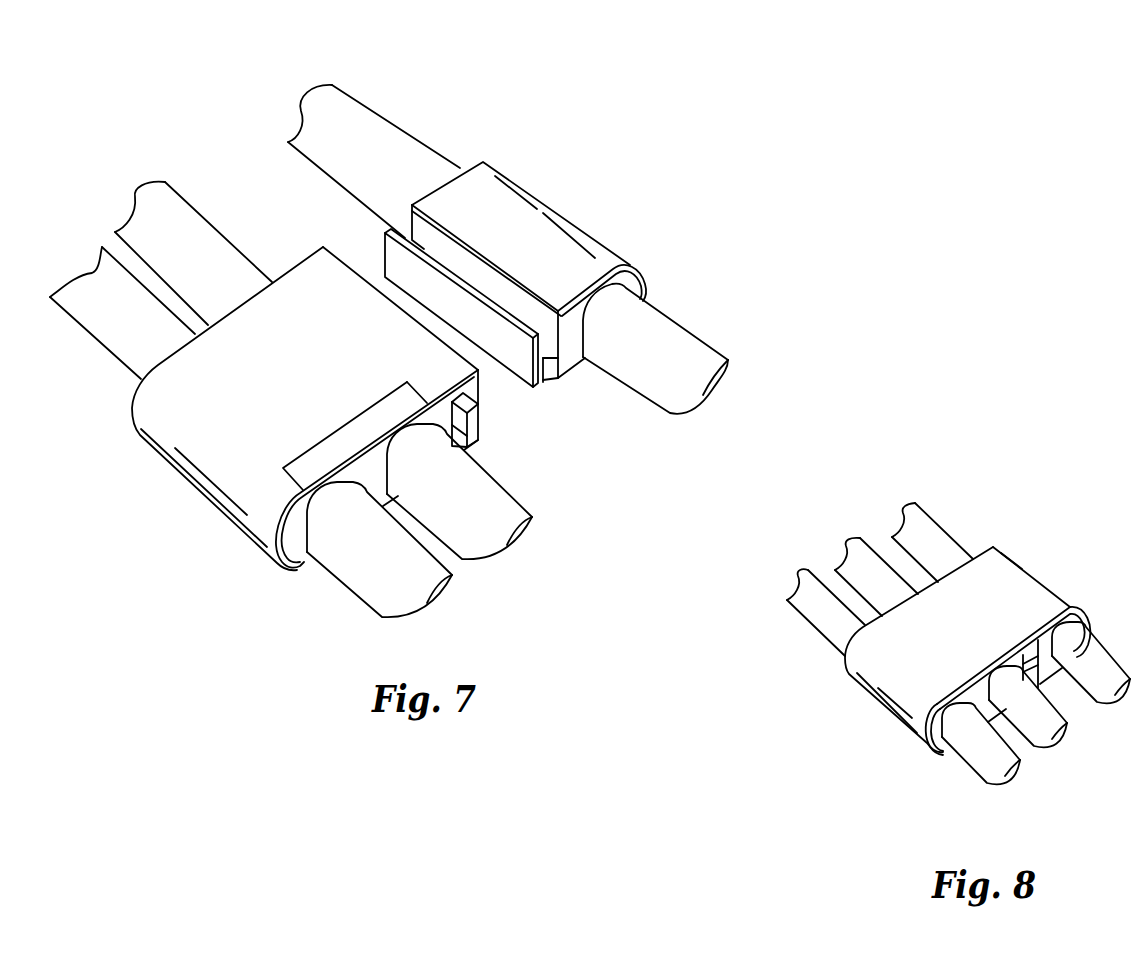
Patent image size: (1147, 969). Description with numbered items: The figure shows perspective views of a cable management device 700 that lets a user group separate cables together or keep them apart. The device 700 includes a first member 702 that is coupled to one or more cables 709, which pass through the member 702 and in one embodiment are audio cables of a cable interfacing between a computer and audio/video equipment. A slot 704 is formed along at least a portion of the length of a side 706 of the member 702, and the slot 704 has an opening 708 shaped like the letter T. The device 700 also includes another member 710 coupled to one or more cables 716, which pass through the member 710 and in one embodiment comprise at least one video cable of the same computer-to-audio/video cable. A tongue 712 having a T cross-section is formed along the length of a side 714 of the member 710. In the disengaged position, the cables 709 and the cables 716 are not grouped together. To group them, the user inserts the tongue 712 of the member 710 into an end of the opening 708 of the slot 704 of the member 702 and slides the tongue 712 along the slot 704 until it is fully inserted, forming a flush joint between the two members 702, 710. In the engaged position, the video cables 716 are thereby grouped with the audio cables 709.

In FIG. 7, the cable management device 700 is at (752, 307).
In FIG. 8, the cable management device 700 is at (1088, 547).
In FIG. 7, the member 702 is at (240, 530).
In FIG. 7, the slot 704 is at (482, 437).
In FIG. 7, the side 706 is at (480, 392).
In FIG. 7, the opening 708 is at (475, 407).
In FIG. 7, the cables 709 is at (182, 210).
In FIG. 7, the member 710 is at (570, 222).
In FIG. 7, the tongue 712 is at (407, 205).
In FIG. 7, the side 714 is at (405, 233).
In FIG. 7, the cables 716 is at (352, 125).